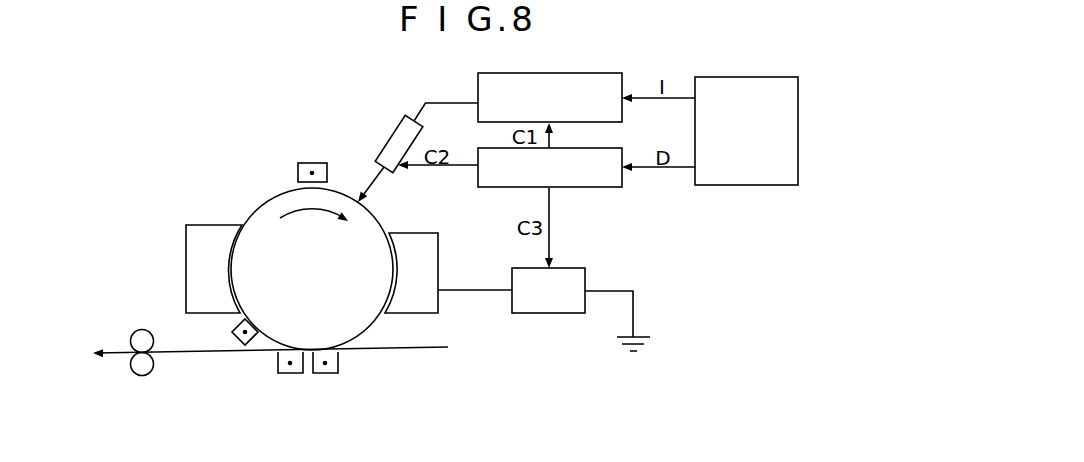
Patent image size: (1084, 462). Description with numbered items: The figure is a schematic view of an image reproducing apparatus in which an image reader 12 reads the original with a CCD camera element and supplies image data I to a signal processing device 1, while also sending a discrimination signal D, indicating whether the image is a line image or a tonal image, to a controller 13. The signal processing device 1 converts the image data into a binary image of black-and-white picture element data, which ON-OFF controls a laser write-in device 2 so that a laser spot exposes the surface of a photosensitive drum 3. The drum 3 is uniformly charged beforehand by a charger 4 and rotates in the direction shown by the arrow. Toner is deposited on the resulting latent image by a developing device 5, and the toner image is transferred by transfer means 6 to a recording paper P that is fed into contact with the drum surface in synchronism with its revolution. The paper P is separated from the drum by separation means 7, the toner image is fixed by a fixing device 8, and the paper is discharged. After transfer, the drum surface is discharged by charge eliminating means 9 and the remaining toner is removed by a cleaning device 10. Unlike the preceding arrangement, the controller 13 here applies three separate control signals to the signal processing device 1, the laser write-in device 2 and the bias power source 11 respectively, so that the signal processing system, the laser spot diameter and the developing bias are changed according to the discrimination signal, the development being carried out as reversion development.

The signal processing device 1 is at (617, 73).
The laser write-in device 2 is at (390, 138).
The photosensitive drum 3 is at (265, 203).
The charger 4 is at (312, 163).
The developing device 5 is at (420, 233).
The transfer means 6 is at (330, 373).
The separation means 7 is at (290, 373).
The fixing device 8 is at (142, 329).
The charge eliminating means 9 is at (232, 332).
The cleaning device 10 is at (210, 225).
The bias power source 11 is at (572, 268).
The image reader 12 is at (757, 77).
The controller 13 is at (612, 148).
The recording paper P is at (397, 349).